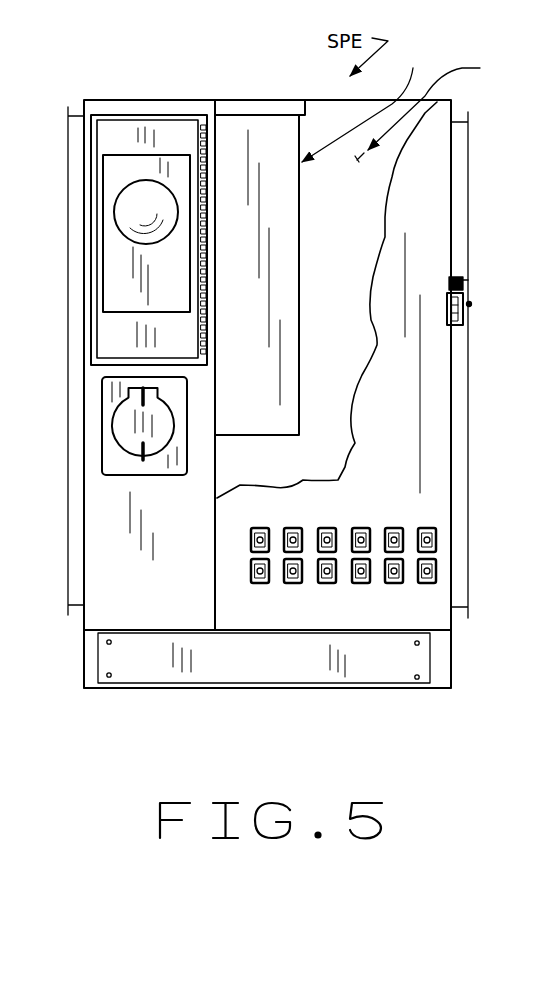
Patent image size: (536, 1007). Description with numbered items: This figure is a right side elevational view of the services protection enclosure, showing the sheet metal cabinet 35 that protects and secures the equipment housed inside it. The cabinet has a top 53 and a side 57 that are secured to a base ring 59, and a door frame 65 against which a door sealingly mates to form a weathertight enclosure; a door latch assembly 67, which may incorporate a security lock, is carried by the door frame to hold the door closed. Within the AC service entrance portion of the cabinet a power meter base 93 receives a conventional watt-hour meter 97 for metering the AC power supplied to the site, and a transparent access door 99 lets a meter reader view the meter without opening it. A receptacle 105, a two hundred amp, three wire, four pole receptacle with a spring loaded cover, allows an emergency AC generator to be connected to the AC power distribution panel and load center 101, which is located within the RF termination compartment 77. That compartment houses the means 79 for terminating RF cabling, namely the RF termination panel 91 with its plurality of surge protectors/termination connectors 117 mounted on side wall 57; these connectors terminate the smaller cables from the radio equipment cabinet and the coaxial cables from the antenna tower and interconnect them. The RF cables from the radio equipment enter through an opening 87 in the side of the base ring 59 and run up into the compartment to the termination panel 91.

The SPE cabinet 35 is at (207, 95).
The top 53 is at (281, 98).
The side 57 is at (428, 221).
The base ring 59 is at (453, 659).
The door frame 65 is at (68, 553).
The door latch assembly 67 is at (447, 313).
The RF termination compartment 77 is at (431, 111).
The means for terminating RF cabling 79 is at (395, 526).
The opening 87 is at (153, 662).
The RF termination panel 91 is at (384, 584).
The power meter base 93 is at (122, 265).
The watt-hour meter 97 is at (142, 209).
The transparent access door 99 is at (120, 349).
The AC power distribution panel and load center 101 is at (367, 104).
The receptacle 105 is at (120, 447).
The surge protectors/termination connectors 117 is at (322, 583).